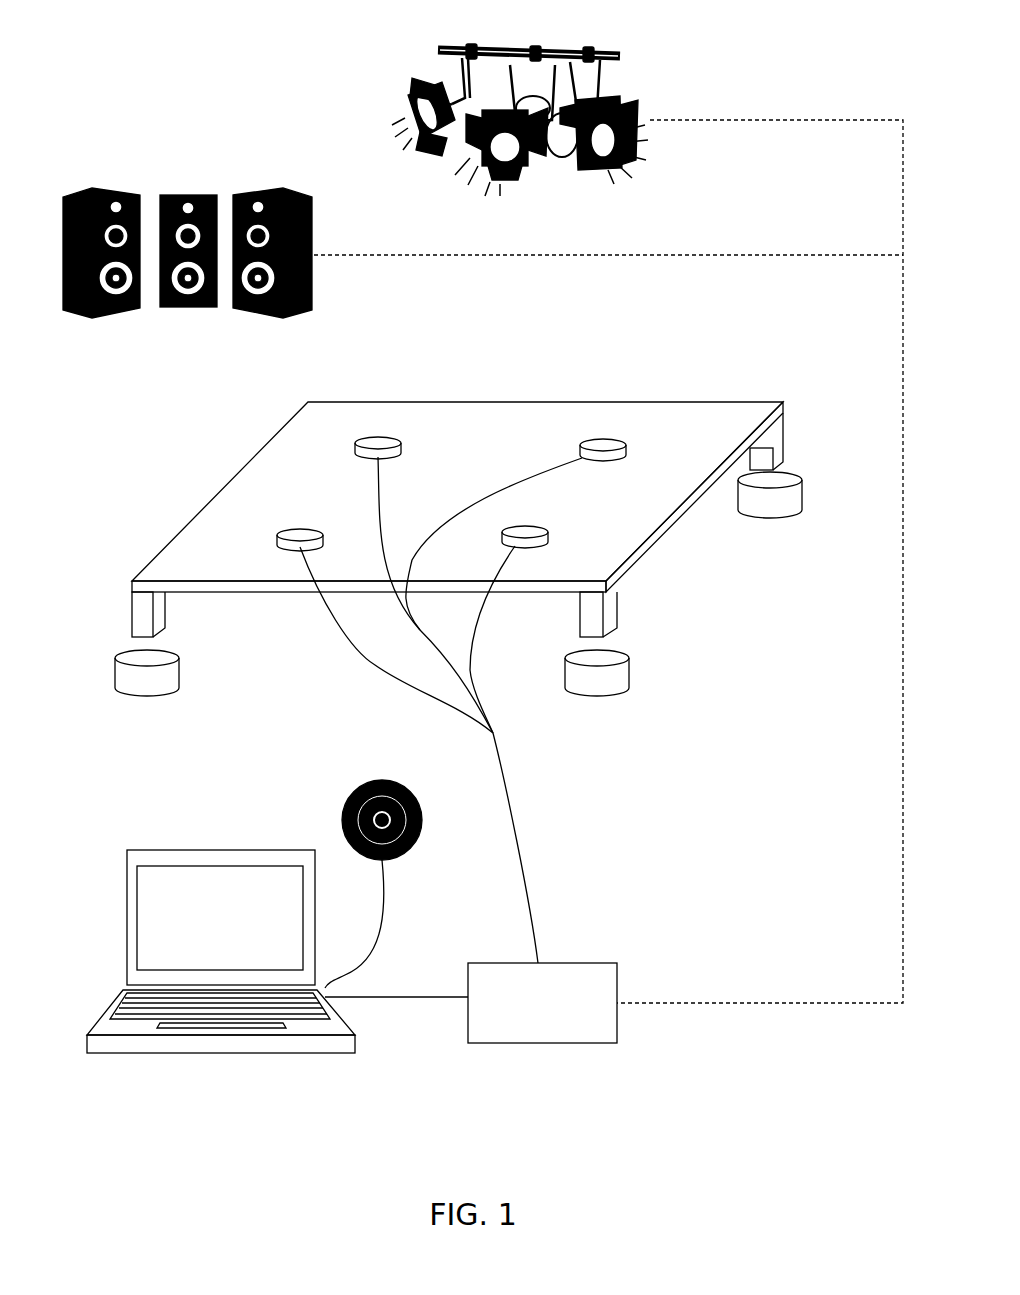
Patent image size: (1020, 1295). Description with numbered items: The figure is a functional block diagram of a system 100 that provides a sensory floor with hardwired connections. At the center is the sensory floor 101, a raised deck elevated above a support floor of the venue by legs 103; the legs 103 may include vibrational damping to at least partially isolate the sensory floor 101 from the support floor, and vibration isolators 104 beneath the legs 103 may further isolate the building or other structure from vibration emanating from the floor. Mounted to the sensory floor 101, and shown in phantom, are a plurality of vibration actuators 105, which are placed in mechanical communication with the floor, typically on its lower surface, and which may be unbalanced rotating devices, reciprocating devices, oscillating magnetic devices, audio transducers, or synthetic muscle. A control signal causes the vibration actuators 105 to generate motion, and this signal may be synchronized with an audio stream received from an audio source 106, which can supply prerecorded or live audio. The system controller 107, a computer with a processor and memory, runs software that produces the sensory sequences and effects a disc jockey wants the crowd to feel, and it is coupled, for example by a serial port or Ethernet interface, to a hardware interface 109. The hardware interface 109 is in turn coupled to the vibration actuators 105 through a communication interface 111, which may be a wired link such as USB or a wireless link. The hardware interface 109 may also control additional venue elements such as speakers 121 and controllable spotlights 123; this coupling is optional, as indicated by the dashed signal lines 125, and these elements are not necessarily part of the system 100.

The system 100 is at (184, 48).
The sensory floor 101 is at (470, 477).
The legs 103 is at (130, 614).
The vibration isolators 104 is at (458, 597).
The vibration actuators 105 is at (372, 437).
The audio source 106 is at (364, 881).
The system controller 107 is at (208, 935).
The hardware interface 109 is at (531, 1025).
The communication interface 111 is at (503, 760).
The speakers 121 is at (167, 195).
The controllable spotlights 123 is at (437, 48).
The dashed signal line(s) 125 is at (903, 642).